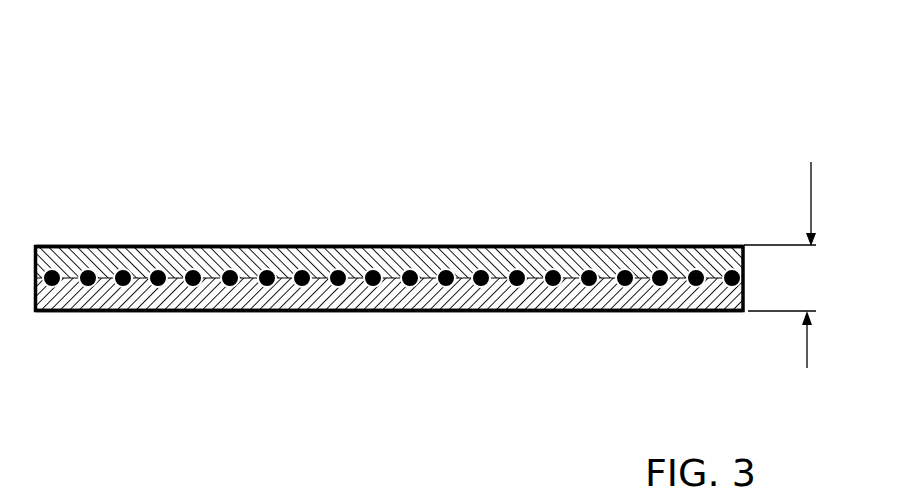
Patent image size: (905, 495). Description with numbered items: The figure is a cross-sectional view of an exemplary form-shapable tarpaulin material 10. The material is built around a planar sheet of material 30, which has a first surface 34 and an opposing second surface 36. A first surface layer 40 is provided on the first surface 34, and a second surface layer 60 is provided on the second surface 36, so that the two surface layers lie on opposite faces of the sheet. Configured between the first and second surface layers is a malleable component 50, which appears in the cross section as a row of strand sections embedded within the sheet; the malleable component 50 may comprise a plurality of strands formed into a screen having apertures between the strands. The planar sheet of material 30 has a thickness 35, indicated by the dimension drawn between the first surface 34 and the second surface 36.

The form-shapable tarpaulin material 10 is at (118, 122).
The planar sheet of material 30 is at (412, 245).
The first surface 34 is at (133, 236).
The thickness 35 is at (811, 162).
The second surface 36 is at (272, 322).
The first surface layer 40 is at (604, 246).
The malleable component 50 is at (660, 250).
The second surface layer 60 is at (672, 312).